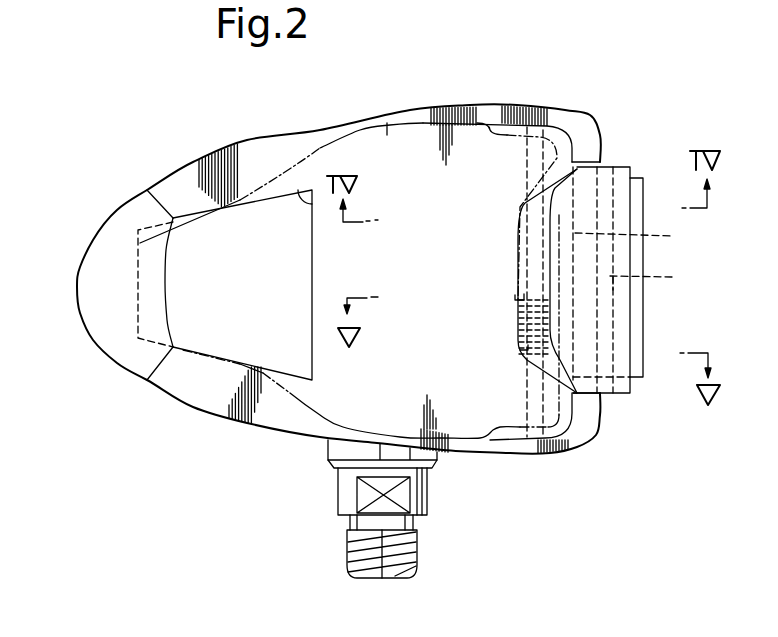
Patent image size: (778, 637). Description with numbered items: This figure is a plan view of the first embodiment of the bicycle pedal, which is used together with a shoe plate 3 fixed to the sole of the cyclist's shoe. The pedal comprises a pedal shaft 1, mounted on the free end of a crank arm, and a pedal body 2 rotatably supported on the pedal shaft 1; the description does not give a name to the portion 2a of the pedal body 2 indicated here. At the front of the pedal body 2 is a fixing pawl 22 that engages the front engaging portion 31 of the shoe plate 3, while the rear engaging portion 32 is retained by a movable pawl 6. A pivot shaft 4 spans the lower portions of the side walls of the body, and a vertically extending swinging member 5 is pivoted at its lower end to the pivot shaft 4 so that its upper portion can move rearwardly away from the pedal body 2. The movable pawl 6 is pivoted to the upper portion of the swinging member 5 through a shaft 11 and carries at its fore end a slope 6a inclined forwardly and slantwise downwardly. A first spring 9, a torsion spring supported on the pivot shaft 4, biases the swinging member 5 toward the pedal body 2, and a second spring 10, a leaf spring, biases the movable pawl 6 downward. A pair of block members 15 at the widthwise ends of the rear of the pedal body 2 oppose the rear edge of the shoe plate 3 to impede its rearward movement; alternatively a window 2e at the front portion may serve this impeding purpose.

The pedal shaft 1 is at (343, 498).
The pedal body 2 is at (450, 108).
The lower wall of pedal body 2a is at (220, 390).
The window 2e is at (295, 186).
The shoe plate 3 is at (383, 113).
The pivot shaft 4 is at (560, 130).
The swinging member 5 is at (642, 325).
The movable pawl 6 is at (620, 193).
The slope 6a is at (523, 258).
The first spring 9 is at (527, 363).
The second spring 10 is at (641, 237).
The shaft 11 is at (661, 277).
The block members 15 is at (586, 150).
The fixing pawl 22 is at (157, 280).
The front engaging portion 31 is at (148, 307).
The rear engaging portion 32 is at (520, 303).